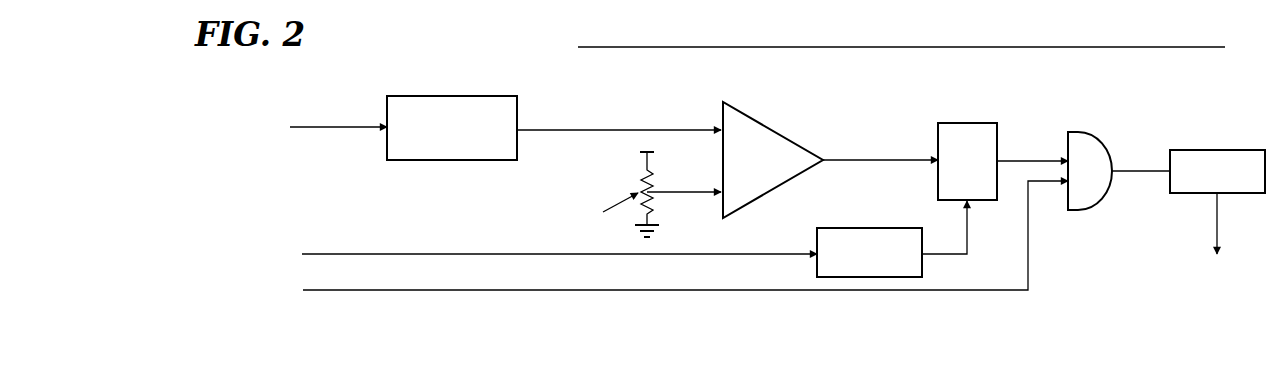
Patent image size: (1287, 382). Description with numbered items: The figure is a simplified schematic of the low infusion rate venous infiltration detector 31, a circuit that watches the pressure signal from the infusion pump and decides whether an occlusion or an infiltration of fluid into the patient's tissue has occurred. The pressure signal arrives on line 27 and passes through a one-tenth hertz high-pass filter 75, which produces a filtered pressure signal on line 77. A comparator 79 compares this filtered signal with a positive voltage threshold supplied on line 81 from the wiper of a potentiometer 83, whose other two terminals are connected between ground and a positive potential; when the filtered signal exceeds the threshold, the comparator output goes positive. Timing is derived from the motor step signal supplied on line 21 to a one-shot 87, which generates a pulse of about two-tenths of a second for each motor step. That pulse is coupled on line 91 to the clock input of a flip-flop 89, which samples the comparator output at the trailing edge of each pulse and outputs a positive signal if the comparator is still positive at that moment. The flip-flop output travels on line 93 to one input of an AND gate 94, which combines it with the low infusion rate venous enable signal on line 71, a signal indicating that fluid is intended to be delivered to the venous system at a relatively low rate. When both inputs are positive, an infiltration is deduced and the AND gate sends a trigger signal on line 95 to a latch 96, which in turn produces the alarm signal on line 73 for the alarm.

The low infusion rate venous infiltration detector 31 is at (907, 37).
The line 27 is at (326, 128).
The 0.1 Hz high-pass filter 75 is at (470, 96).
The line 77 is at (580, 130).
The comparator 79 is at (772, 128).
The potentiometer 83 is at (603, 212).
The line 81 is at (683, 193).
The flip-flop 89 is at (955, 123).
The line 93 is at (1010, 161).
The one-shot 87 is at (878, 228).
The line 91 is at (967, 232).
The line 21 is at (439, 253).
The line 71 is at (485, 291).
The AND gate 94 is at (1093, 211).
The line 95 is at (1123, 171).
The latch 96 is at (1218, 150).
The line 73 is at (1216, 215).